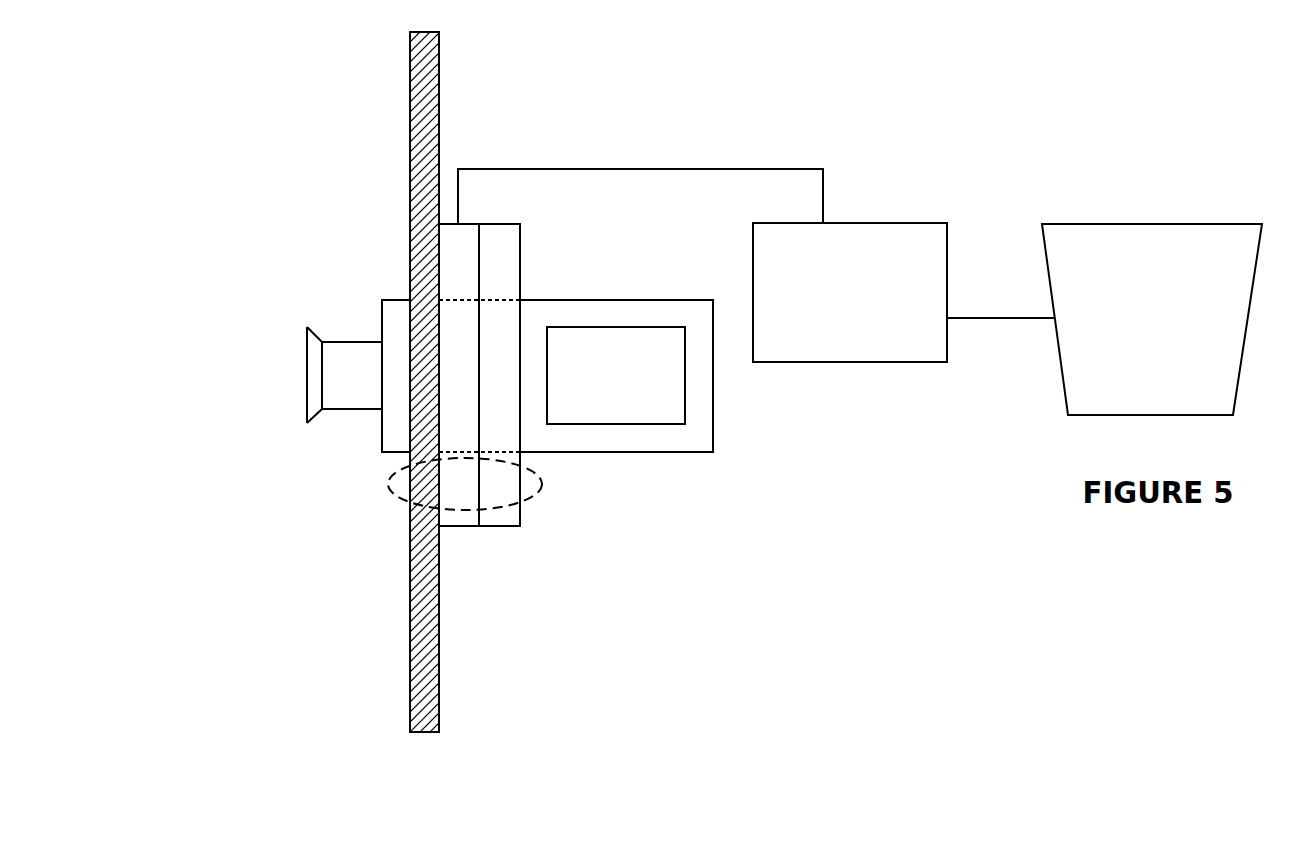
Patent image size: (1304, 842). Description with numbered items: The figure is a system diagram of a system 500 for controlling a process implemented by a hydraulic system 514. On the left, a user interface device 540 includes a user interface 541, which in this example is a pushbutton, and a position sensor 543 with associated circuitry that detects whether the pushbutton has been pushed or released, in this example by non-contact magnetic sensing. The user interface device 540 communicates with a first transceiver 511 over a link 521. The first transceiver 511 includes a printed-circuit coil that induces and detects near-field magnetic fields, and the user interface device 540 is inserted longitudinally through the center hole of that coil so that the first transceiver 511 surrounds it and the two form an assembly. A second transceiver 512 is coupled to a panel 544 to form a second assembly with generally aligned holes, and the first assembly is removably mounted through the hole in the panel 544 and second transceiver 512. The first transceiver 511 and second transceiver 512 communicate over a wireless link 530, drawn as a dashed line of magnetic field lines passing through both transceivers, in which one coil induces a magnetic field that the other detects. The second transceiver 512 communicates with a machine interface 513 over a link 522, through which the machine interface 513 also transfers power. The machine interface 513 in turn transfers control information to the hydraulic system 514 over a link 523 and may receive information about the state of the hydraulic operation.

The system 500 is at (1050, 120).
The first transceiver 511 is at (499, 526).
The second transceiver 512 is at (456, 526).
The machine interface 513 is at (850, 292).
The hydraulic system 514 is at (1152, 319).
The link 521 is at (555, 300).
The link 522 is at (720, 169).
The link 523 is at (970, 318).
The wireless link 530 is at (543, 492).
The user interface device 540 is at (382, 435).
The user interface 541 is at (307, 375).
The position sensor 543 is at (616, 375).
The panel 544 is at (441, 135).